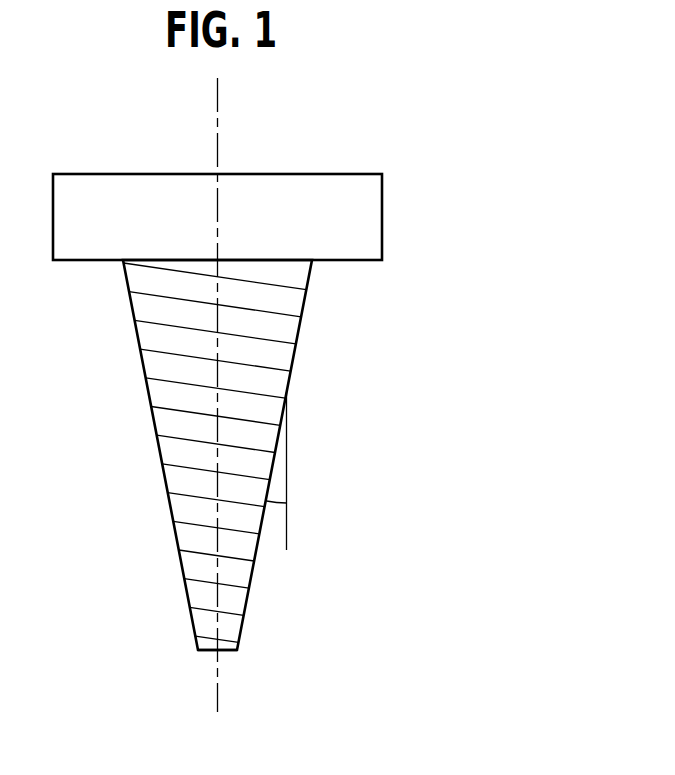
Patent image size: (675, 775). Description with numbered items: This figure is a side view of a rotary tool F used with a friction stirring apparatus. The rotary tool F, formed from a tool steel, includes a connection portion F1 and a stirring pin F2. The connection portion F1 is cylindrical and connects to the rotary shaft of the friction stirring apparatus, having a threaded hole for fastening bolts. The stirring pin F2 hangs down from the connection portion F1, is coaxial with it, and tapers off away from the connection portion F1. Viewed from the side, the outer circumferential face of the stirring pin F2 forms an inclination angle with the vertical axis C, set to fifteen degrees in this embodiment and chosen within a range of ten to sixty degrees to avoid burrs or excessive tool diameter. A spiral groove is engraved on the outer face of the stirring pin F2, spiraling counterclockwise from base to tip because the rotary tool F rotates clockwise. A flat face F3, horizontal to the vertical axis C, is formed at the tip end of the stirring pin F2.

The vertical axis C is at (218, 103).
The rotary tool F is at (453, 120).
The connection portion F1 is at (382, 217).
The stirring pin F2 is at (282, 333).
The flat face F3 is at (225, 650).